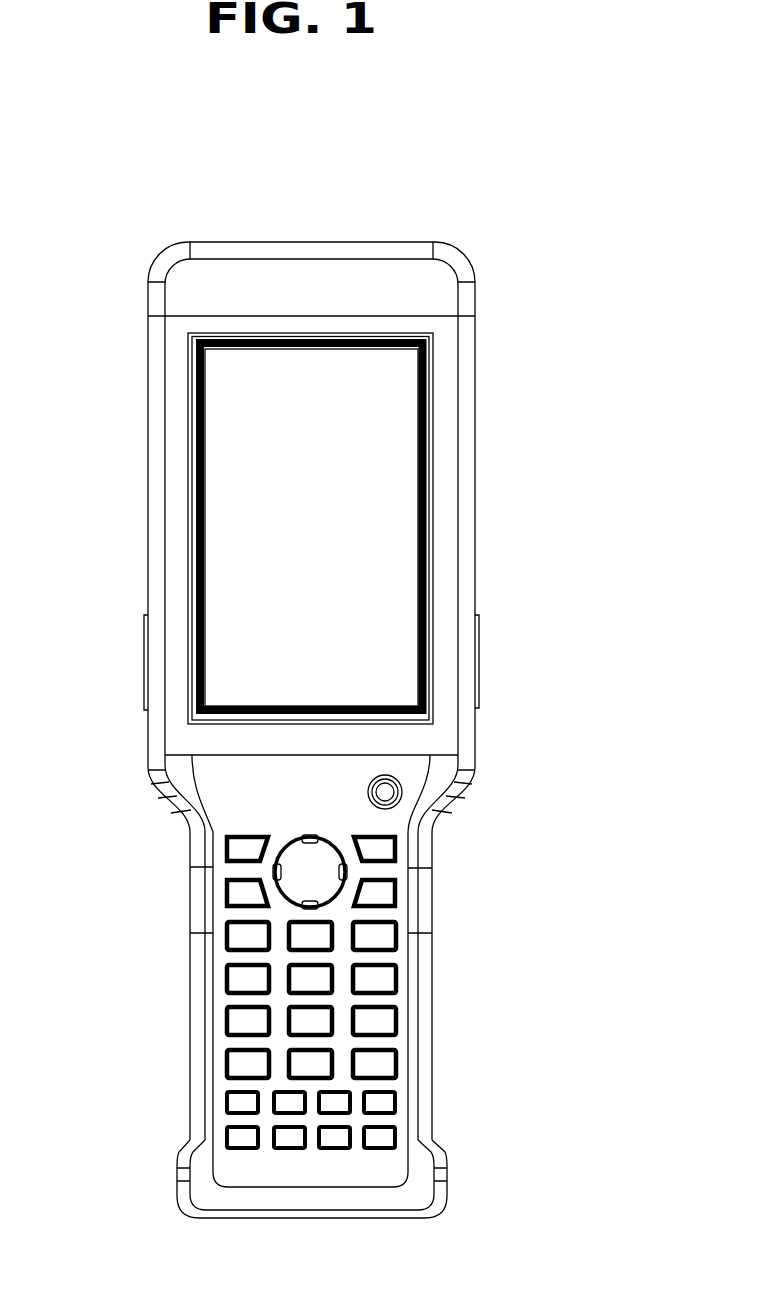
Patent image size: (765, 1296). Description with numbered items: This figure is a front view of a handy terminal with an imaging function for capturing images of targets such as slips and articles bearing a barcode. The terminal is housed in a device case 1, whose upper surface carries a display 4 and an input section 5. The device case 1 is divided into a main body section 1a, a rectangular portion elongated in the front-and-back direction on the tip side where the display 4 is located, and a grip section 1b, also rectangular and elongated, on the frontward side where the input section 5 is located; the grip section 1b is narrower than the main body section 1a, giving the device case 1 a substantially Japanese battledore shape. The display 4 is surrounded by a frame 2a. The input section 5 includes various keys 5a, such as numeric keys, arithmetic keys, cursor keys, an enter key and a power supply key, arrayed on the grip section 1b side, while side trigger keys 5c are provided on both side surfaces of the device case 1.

The device case 1 is at (152, 248).
The main body section 1a is at (155, 502).
The grip section 1b is at (190, 1032).
The display frame 2a is at (425, 502).
The display 4 is at (392, 420).
The input section 5 is at (248, 939).
The keys 5a is at (386, 793).
The side trigger keys 5c is at (147, 673).